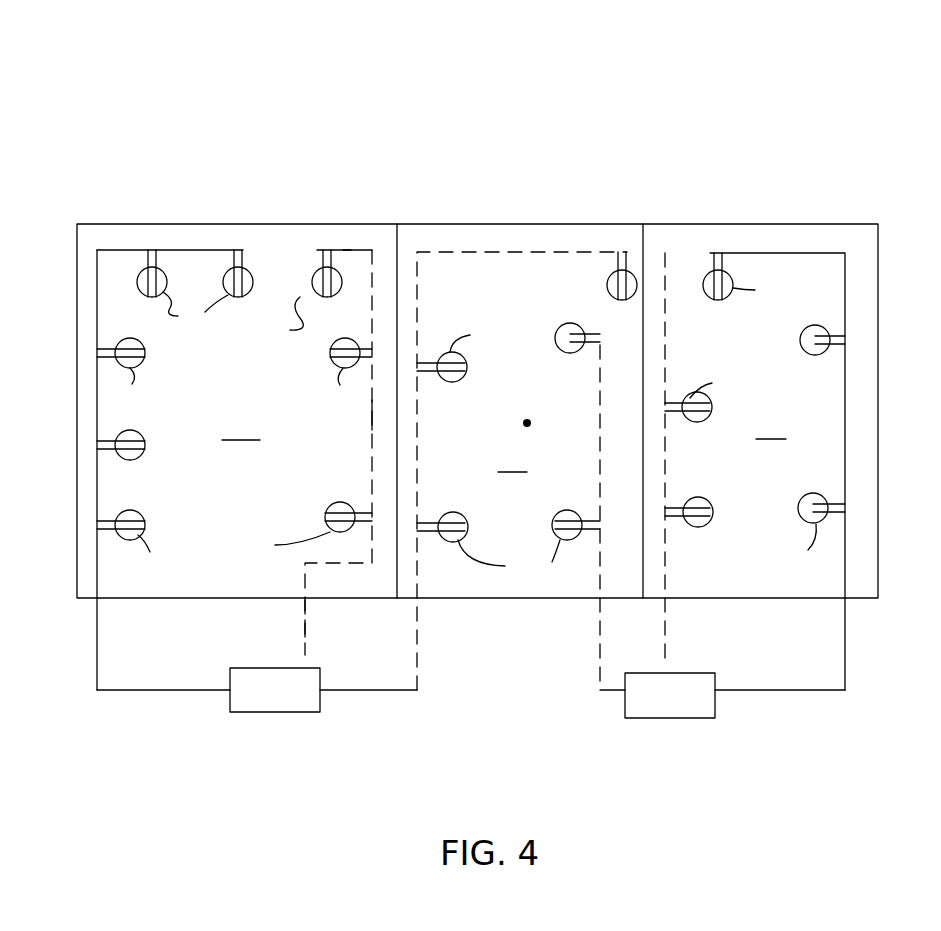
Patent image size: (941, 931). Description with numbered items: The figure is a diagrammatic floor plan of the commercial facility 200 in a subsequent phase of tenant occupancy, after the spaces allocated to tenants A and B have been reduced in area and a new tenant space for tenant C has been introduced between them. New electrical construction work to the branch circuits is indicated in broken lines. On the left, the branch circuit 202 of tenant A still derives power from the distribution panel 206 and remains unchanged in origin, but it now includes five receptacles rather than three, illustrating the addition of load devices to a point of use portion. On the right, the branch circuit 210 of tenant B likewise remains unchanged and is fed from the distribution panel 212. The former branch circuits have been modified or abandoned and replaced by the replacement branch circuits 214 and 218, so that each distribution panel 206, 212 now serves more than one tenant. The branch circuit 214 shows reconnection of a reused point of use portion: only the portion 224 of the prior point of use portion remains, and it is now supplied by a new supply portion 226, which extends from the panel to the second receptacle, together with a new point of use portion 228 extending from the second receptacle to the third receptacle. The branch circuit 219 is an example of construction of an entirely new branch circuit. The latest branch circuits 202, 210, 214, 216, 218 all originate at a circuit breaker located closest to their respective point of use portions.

The facility 200 is at (797, 100).
The branch circuit 202 is at (155, 188).
The distribution panel 206 is at (258, 712).
The branch circuit 210 is at (838, 203).
The distribution panel 212 is at (665, 718).
The replacement branch circuit 214 is at (357, 157).
The branch circuit 216 is at (497, 203).
The replacement branch circuit 218 is at (669, 203).
The branch circuit 219 is at (568, 320).
The portion of the point of use portion 224 is at (348, 250).
The supply portion 226 is at (300, 615).
The point of use portion 228 is at (373, 412).